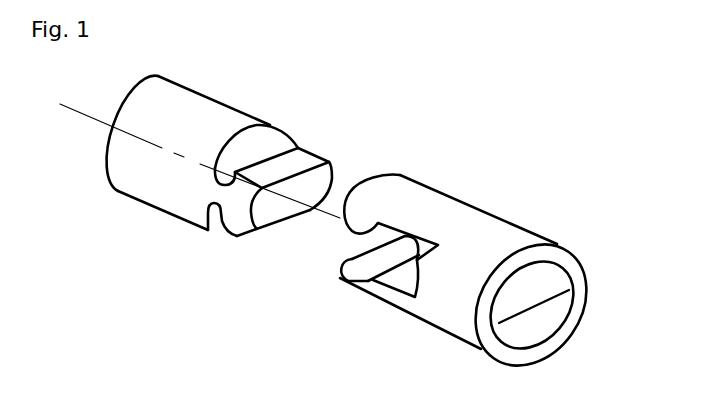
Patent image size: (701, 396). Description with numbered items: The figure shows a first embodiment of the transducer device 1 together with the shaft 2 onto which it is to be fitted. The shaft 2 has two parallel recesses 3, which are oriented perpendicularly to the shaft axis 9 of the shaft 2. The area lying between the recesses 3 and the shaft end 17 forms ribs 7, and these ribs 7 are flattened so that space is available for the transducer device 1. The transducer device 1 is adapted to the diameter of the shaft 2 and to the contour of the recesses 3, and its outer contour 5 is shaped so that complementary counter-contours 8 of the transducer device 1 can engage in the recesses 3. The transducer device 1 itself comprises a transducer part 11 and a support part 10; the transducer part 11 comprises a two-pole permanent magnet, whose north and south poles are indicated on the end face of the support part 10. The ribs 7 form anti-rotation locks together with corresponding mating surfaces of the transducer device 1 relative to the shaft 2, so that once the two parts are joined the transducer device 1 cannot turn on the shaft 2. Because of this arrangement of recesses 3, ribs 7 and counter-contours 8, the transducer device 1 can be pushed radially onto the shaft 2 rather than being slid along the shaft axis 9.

The transducer device 1 is at (497, 208).
The shaft 2 is at (217, 93).
The recess 3 is at (224, 171).
The outer contour 5 is at (380, 188).
The rib 7 is at (303, 160).
The counter-contour 8 is at (351, 223).
The shaft axis 9 is at (133, 137).
The support part 10 is at (457, 237).
The transducer part 11 is at (553, 311).
The shaft end 17 is at (273, 207).